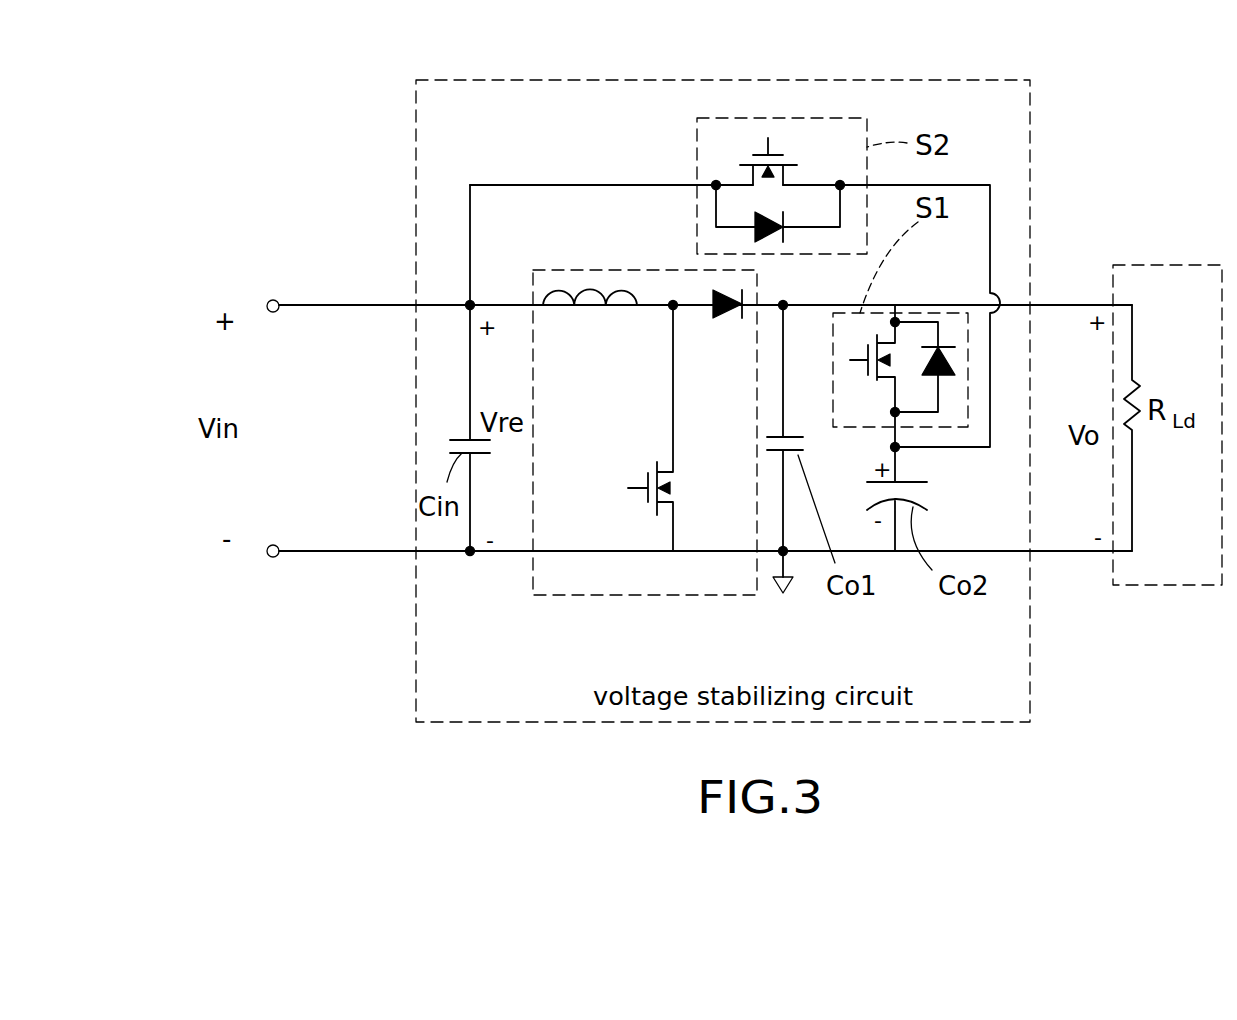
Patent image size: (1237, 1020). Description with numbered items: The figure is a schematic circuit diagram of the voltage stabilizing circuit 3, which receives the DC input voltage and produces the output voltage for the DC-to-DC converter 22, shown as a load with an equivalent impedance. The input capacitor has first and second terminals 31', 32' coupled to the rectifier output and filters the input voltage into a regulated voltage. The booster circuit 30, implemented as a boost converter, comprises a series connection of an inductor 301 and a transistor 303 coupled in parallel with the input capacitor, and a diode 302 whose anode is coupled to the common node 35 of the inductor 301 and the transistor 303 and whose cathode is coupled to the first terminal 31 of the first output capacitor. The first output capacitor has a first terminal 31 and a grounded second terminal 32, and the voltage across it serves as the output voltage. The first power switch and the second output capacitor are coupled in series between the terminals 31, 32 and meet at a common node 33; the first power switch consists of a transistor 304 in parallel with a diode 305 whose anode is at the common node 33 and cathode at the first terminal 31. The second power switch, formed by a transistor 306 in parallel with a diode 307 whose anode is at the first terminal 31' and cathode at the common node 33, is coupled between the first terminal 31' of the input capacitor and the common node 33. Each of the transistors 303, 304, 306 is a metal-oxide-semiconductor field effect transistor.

The voltage stabilizing circuit 3 is at (890, 78).
The DC-to-DC converter 22 is at (1167, 262).
The booster circuit 30 is at (617, 270).
The first terminal of the first output capacitor 31 is at (807, 290).
The first terminal of the input capacitor 31' is at (452, 345).
The grounded second terminal of the first output capacitor 32 is at (816, 597).
The second terminal of the input capacitor 32' is at (468, 596).
The common node 33 is at (898, 449).
The common node of the inductor and the transistor 35 is at (667, 312).
The inductor 301 is at (591, 292).
The diode 302 is at (720, 318).
The transistor 303 is at (672, 485).
The transistor 304 is at (877, 378).
The diode 305 is at (945, 366).
The transistor 306 is at (748, 163).
The diode 307 is at (752, 212).